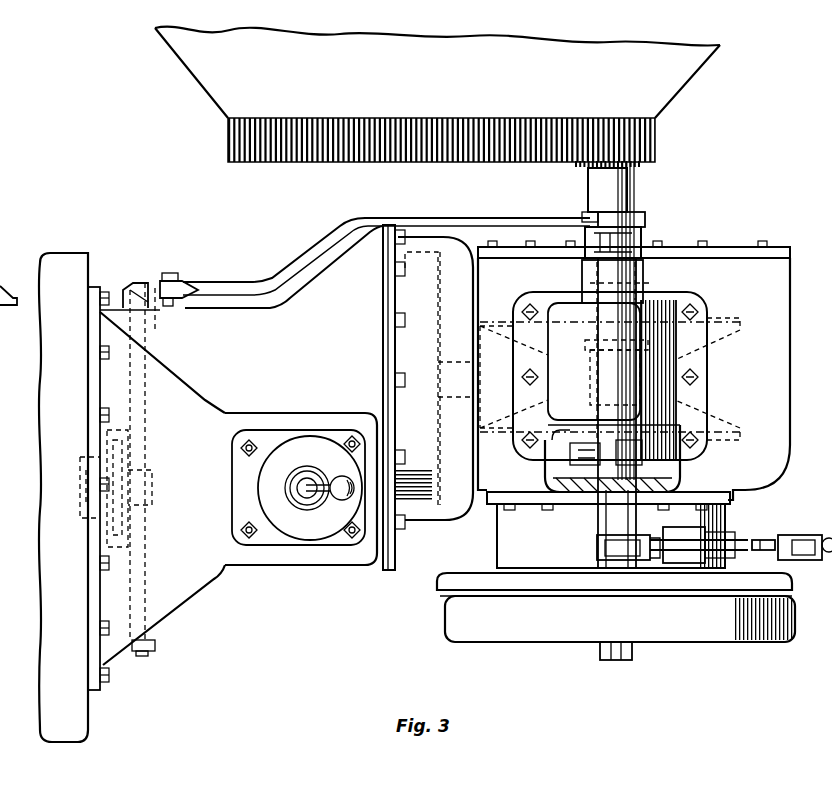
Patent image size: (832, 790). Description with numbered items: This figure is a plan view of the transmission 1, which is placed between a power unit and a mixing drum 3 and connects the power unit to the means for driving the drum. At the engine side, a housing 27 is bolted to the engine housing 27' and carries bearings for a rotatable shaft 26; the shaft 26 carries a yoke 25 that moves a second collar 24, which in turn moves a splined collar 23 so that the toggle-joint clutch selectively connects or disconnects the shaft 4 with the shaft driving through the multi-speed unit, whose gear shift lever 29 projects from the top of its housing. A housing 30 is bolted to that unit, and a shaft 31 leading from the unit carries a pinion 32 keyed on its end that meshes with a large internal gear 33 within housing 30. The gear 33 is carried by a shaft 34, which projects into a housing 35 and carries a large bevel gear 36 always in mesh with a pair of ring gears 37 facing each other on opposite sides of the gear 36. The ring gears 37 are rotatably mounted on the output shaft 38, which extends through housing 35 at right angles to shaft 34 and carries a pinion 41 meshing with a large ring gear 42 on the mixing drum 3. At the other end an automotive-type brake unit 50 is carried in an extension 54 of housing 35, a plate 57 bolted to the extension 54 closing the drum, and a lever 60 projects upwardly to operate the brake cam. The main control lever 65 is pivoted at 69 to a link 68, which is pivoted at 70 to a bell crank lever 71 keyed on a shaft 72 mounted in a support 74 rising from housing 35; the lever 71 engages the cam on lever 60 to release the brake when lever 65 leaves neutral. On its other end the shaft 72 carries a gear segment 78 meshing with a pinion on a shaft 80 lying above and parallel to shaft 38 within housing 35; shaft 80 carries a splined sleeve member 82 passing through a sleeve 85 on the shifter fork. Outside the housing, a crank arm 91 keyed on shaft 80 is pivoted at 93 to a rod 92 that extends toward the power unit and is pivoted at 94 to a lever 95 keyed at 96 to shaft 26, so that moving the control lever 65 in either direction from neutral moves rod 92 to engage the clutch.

The transmission 1 is at (301, 504).
The mixing drum 3 is at (663, 78).
The shaft 4 is at (501, 450).
The collar 23 is at (80, 494).
The second collar 24 is at (124, 445).
The yoke 25 is at (135, 480).
The rotatable shaft 26 is at (137, 388).
The housing 27 is at (156, 488).
The engine housing 27' is at (95, 497).
The gear shift lever 29 is at (324, 496).
The housing 30 is at (430, 240).
The shaft 31 is at (378, 484).
The pinion 32 is at (418, 503).
The internal gear 33 is at (392, 279).
The shaft 34 is at (458, 388).
The housing 35 is at (722, 268).
The bevel gear 36 is at (482, 350).
The ring gears 37 is at (498, 325).
The output shaft 38 is at (595, 192).
The pinion 41 is at (643, 162).
The ring gear 42 is at (402, 142).
The brake unit 50 is at (500, 641).
The extension 54 is at (502, 548).
The plate 57 is at (440, 590).
The lever 60 is at (706, 558).
The main control lever 65 is at (803, 533).
The link 68 is at (757, 540).
The pivot 69 is at (800, 558).
The pivot 70 is at (602, 552).
The bell crank lever 71 is at (641, 556).
The shaft 72 is at (603, 522).
The support 74 is at (672, 472).
The gear segment 78 is at (557, 472).
The shaft 80 is at (647, 287).
The sleeve member 82 is at (592, 346).
The sleeve 85 is at (598, 380).
The crank arm 91 is at (643, 232).
The rod 92 is at (290, 268).
The pivot 93 is at (636, 214).
The pivot 94 is at (180, 280).
The lever 95 is at (147, 288).
The keyed connection 96 is at (158, 310).